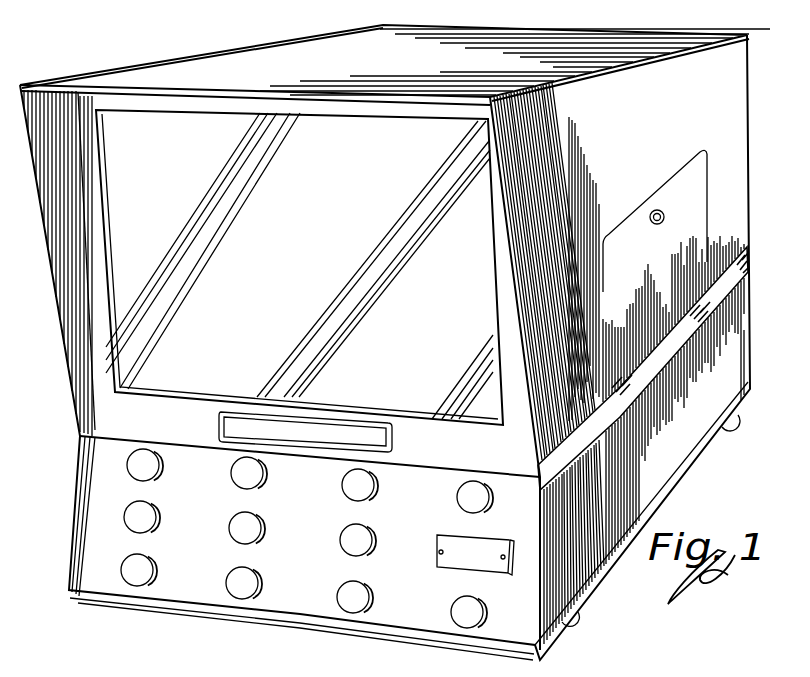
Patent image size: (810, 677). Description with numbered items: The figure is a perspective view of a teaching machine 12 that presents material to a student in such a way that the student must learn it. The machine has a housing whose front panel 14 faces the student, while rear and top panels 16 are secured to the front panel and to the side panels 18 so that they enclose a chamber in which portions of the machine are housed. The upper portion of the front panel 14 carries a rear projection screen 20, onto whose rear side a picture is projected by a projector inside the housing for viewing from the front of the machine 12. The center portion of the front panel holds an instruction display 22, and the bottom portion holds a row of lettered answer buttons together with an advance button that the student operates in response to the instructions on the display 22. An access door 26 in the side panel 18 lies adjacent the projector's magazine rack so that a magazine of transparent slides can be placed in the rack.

The teaching machine 12 is at (688, 479).
The front panel 14 is at (110, 412).
The rear and top panels 16 is at (243, 65).
The side panels 18 is at (727, 100).
The rear projection screen 20 is at (227, 368).
The instruction display 22 is at (393, 436).
The access door 26 is at (633, 228).